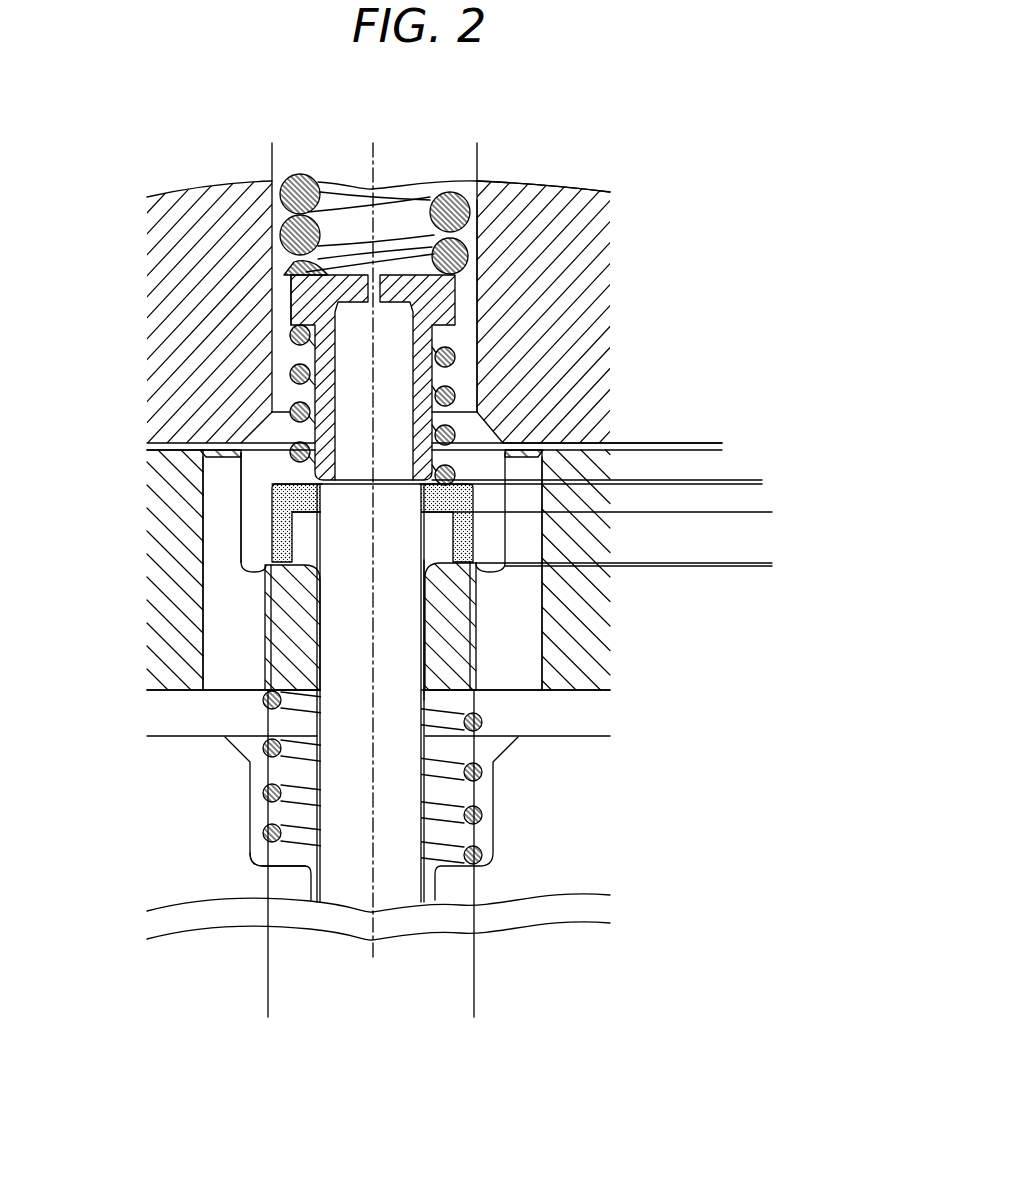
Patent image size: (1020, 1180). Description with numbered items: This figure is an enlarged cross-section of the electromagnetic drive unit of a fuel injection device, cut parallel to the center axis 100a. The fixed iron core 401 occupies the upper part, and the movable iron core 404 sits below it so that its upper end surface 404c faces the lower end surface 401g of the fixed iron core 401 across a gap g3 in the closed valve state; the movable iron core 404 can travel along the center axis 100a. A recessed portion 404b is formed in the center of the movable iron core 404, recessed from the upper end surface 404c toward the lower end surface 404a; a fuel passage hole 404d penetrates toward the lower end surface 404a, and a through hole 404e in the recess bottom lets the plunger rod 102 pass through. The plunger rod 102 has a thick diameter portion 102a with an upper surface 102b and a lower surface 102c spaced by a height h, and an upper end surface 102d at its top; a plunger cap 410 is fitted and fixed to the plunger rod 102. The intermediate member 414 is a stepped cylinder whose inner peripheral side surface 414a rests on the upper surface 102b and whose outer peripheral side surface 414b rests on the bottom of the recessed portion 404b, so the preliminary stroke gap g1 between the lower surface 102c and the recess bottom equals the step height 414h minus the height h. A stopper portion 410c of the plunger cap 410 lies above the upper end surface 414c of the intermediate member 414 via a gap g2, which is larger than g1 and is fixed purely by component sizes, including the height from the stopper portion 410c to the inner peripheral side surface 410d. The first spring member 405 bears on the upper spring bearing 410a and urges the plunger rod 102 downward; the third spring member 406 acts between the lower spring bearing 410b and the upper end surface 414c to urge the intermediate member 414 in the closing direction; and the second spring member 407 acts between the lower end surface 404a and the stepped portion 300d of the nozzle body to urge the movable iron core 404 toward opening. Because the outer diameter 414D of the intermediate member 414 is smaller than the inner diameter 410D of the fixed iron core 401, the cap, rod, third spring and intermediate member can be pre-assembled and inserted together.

The fixed iron core 401 is at (560, 248).
The lower end surface of the fixed iron core 401g is at (595, 443).
The plunger cap 410 is at (478, 300).
The upper spring bearing 410a is at (287, 268).
The lower spring bearing 410b is at (500, 316).
The stopper portion 410c is at (495, 430).
The inner peripheral side surface of the plunger cap 410d is at (578, 188).
The inner diameter of the fixed iron core 410D is at (477, 160).
The first spring member 405 is at (280, 234).
The third spring member 406 is at (458, 357).
The plunger rod 102 is at (345, 362).
The thick diameter portion 102a is at (455, 514).
The upper surface of the thick diameter portion 102b is at (447, 486).
The lower surface of the thick diameter portion 102c is at (433, 566).
The upper end surface of the plunger rod 102d is at (292, 288).
The center axis 100a is at (370, 883).
The movable iron core 404 is at (570, 596).
The lower end surface of the movable iron core 404a is at (190, 692).
The recessed portion 404b is at (250, 496).
The upper end surface of the movable iron core 404c is at (240, 445).
The fuel passage hole 404d is at (525, 650).
The through hole 404e is at (500, 693).
The intermediate member 414 is at (262, 568).
The inner peripheral side surface of the intermediate member 414a is at (275, 540).
The outer peripheral side surface of the intermediate member 414b is at (300, 595).
The upper end surface of the intermediate member 414c is at (255, 472).
The outer diameter of the intermediate member 414D is at (474, 1000).
The height of the recessed step 414h is at (757, 512).
The second spring member 407 is at (237, 743).
The stepped portion of the nozzle body 300d is at (268, 865).
The gap g1 (preliminary stroke gap) g1 is at (712, 540).
The gap g2 is at (748, 460).
The gap g3 is at (712, 424).
The height of the thick diameter portion h is at (725, 512).